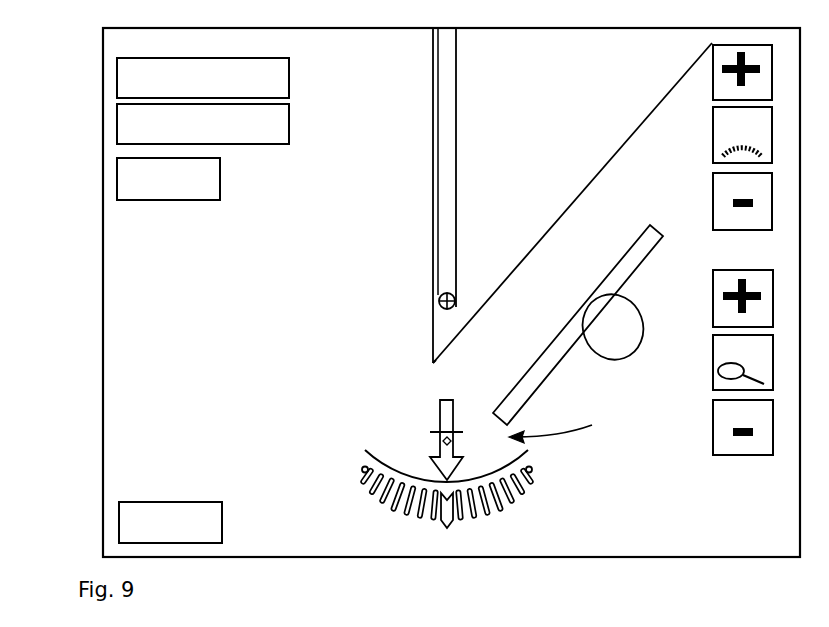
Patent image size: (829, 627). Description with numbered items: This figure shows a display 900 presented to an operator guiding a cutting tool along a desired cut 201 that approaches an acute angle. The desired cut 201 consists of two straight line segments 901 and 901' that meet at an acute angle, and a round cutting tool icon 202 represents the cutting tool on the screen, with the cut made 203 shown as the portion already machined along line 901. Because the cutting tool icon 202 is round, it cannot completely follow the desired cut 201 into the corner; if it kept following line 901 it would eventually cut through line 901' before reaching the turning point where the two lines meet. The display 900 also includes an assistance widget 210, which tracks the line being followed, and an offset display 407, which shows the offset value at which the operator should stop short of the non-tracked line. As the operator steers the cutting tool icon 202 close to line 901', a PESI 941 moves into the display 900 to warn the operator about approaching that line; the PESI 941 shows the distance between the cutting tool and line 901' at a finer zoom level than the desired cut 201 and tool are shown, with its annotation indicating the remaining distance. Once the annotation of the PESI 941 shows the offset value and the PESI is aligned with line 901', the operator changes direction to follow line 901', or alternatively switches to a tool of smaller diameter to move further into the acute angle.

The display 900 is at (146, 328).
The straight line segment 901 is at (399, 195).
The straight line segment 901' is at (572, 203).
The cut made 203 is at (445, 202).
The cutting tool icon 202 is at (440, 300).
The desired cut 201 is at (432, 325).
The PESI 941 is at (643, 311).
The assistance widget 210 is at (576, 429).
The offset display 407 is at (217, 520).